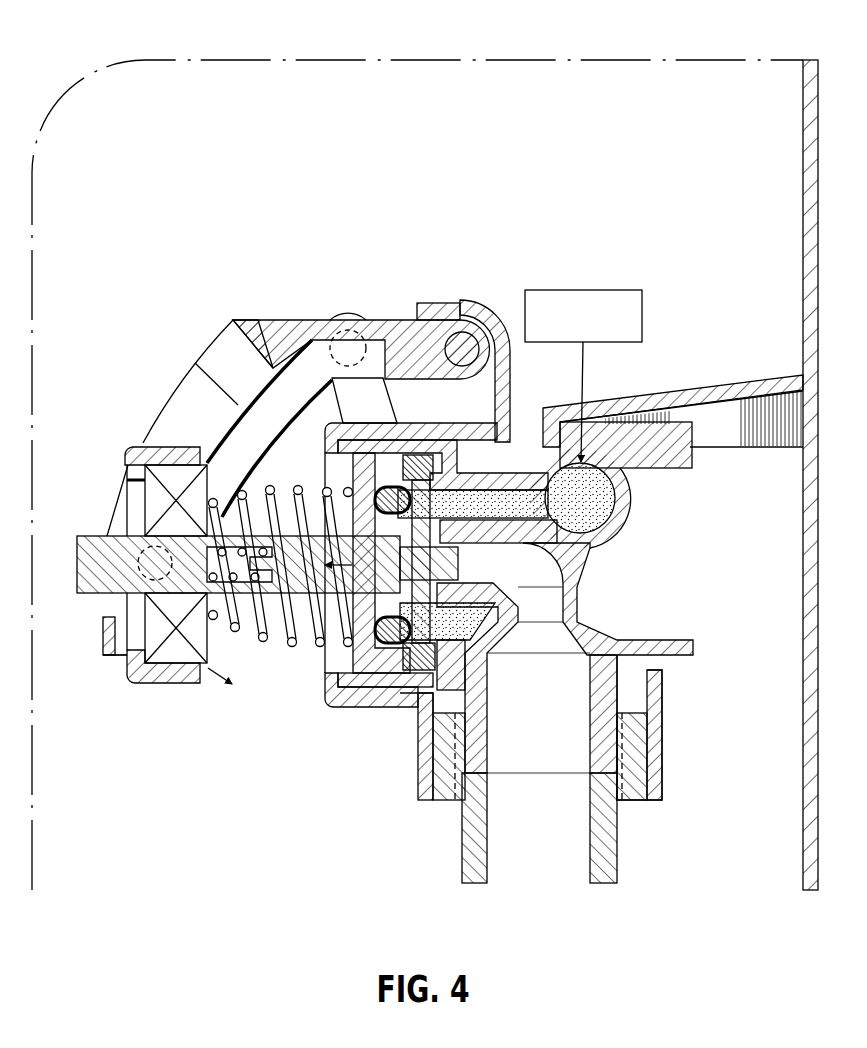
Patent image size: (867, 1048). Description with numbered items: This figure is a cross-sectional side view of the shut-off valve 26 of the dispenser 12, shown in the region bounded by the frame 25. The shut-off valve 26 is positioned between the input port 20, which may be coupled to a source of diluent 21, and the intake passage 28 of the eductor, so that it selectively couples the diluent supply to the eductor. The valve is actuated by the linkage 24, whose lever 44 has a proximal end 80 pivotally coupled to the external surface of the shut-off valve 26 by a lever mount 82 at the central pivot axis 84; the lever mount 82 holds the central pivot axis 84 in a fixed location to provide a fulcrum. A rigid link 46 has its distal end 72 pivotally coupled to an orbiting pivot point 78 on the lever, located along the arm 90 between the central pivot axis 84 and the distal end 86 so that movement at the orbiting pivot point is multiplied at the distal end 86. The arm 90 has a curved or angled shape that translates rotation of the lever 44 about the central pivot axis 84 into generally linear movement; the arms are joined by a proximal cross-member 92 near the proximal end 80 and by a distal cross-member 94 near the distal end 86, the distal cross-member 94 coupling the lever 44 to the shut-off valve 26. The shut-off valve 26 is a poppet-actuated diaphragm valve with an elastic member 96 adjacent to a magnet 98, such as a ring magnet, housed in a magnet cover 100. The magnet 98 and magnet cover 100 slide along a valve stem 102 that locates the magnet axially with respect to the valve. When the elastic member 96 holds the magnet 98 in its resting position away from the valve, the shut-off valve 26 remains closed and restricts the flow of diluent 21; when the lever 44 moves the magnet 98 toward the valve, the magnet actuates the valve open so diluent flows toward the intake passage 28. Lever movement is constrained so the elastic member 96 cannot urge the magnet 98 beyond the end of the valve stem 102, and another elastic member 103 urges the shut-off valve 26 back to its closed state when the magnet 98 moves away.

The dispenser 12 is at (428, 58).
The input port 20 is at (605, 505).
The source of diluent 21 is at (632, 290).
The linkage 24 is at (359, 239).
The frame 25 is at (803, 150).
The shut-off valve 26 is at (370, 709).
The intake passage 28 is at (539, 735).
The lever 44 is at (156, 421).
The rigid link 46 is at (395, 401).
The distal end 72 is at (348, 312).
The orbiting pivot point 78 is at (331, 345).
The proximal end 80 is at (437, 303).
The lever mount 82 is at (496, 318).
The central pivot axis 84 is at (463, 345).
The distal end 86 is at (108, 657).
The arm 90 is at (258, 422).
The proximal cross-member 92 is at (243, 320).
The distal cross-member 94 is at (101, 632).
The elastic member 96 is at (291, 647).
The magnet 98 is at (147, 513).
The magnet cover 100 is at (168, 684).
The valve stem 102 is at (93, 535).
The elastic member 103 is at (232, 582).